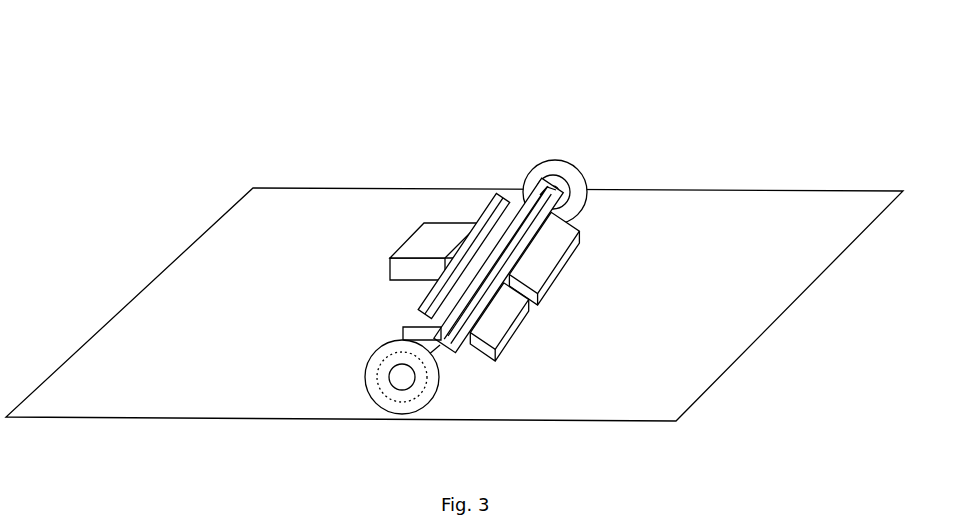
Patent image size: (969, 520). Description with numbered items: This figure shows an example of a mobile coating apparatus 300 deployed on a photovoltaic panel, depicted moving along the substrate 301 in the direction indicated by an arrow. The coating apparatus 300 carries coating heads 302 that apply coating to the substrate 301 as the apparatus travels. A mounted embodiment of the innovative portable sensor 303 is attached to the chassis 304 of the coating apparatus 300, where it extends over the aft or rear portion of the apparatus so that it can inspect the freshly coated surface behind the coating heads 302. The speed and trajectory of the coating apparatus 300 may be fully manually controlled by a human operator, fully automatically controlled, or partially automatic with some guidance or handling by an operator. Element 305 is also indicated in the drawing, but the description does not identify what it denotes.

The coating apparatus 300 is at (614, 64).
The substrate 301 is at (815, 214).
The coating heads 302 is at (580, 232).
The portable sensor 303 is at (385, 253).
The chassis 304 is at (400, 318).
The guide rail 305 is at (467, 252).